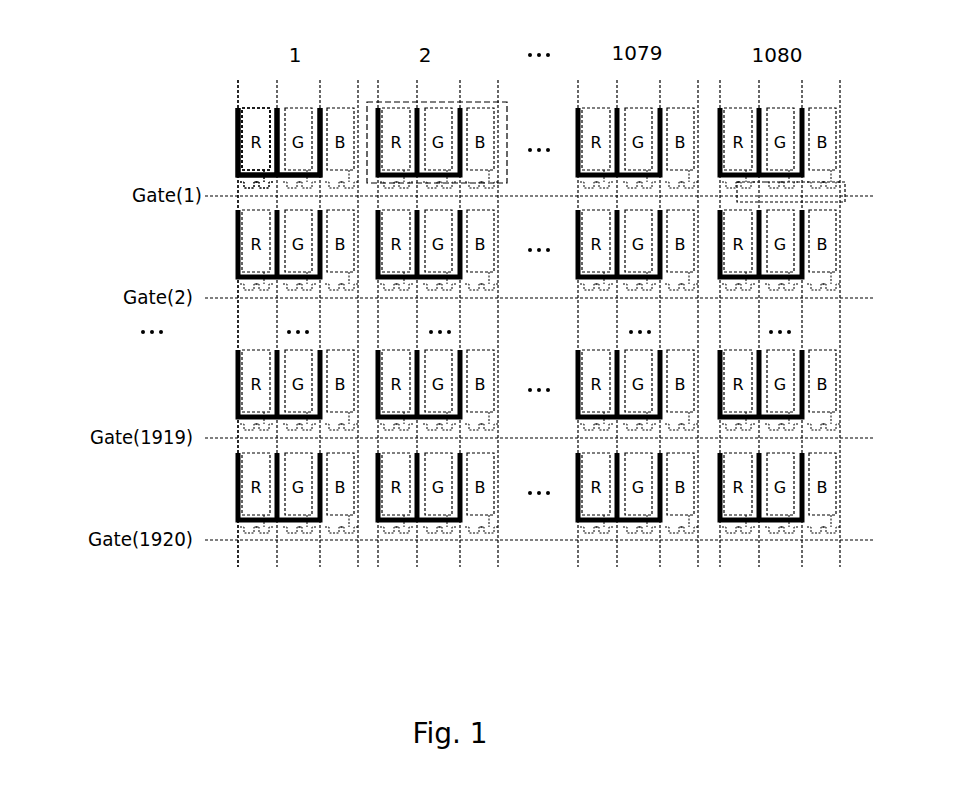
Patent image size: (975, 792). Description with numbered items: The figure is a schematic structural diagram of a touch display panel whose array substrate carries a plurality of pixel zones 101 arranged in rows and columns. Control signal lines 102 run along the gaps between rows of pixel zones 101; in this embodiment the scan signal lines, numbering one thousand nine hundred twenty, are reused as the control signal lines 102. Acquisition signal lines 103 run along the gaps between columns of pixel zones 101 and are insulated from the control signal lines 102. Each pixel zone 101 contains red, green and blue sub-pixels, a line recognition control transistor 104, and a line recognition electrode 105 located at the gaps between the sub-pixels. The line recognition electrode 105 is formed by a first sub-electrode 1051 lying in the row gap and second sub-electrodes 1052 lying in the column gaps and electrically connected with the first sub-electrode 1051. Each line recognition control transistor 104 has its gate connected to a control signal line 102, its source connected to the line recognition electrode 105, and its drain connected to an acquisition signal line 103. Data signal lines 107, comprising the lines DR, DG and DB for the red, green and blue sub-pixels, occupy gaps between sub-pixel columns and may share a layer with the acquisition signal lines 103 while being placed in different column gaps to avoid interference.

The pixel zone 101 is at (467, 102).
The control signal line 102 is at (72, 200).
The acquisition signal line 103 is at (237, 93).
The line recognition control transistor 104 is at (845, 182).
The line recognition electrode 105 is at (112, 88).
The first sub-electrode 1051 is at (242, 170).
The second sub-electrode 1052 is at (240, 117).
The data signal line 107 is at (365, 596).